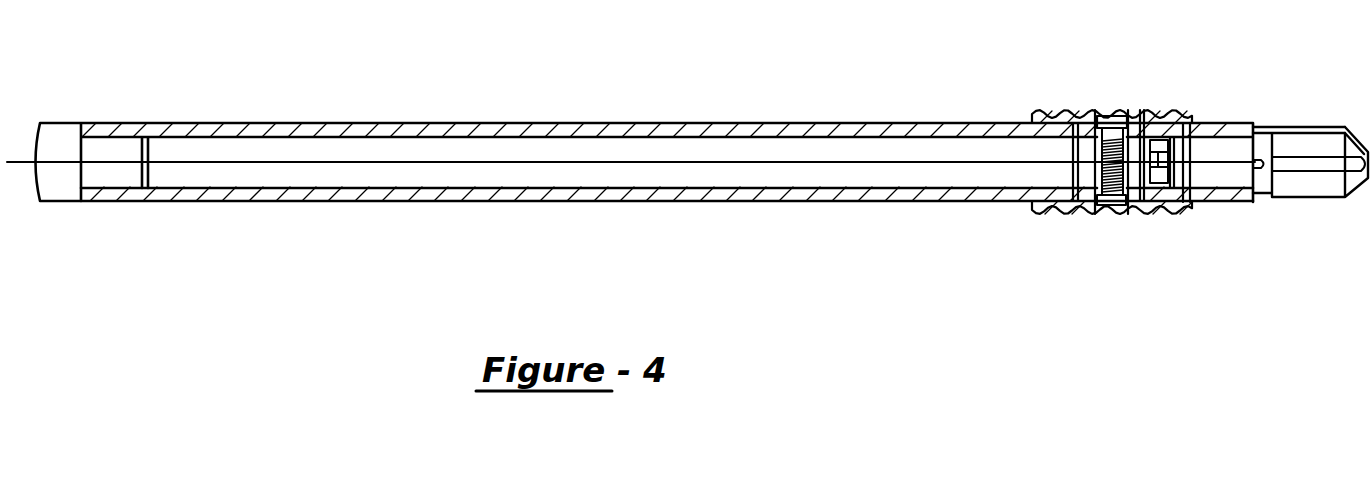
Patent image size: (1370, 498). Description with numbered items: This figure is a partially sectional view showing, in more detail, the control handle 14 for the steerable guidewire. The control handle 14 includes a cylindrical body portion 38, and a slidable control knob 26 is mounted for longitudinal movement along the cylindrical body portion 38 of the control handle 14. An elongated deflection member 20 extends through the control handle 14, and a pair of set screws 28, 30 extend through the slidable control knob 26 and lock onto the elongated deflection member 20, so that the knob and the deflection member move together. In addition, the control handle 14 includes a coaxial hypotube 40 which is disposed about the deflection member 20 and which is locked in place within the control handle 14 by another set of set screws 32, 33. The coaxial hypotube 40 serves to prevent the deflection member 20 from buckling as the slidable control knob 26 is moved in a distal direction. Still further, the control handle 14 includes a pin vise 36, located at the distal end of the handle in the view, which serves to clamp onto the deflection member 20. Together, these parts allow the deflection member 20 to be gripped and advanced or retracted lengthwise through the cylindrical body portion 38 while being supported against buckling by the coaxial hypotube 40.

The control handle 14 is at (786, 122).
The elongated deflection member 20 is at (897, 164).
The slidable control knob 26 is at (1058, 110).
The set screw 28 is at (1118, 114).
The set screw 30 is at (1112, 210).
The set screw 32 is at (1146, 112).
The set screw 33 is at (1156, 206).
The pin vise 36 is at (1302, 125).
The cylindrical body portion 38 is at (633, 197).
The coaxial hypotube 40 is at (1215, 172).